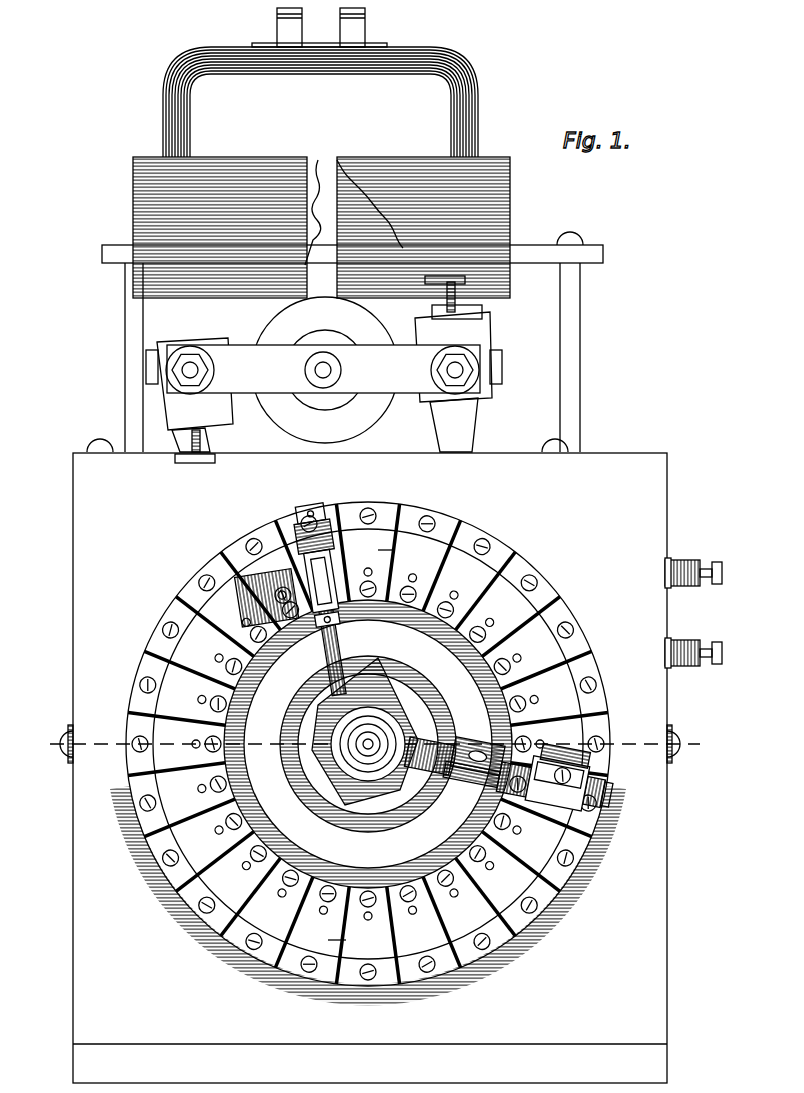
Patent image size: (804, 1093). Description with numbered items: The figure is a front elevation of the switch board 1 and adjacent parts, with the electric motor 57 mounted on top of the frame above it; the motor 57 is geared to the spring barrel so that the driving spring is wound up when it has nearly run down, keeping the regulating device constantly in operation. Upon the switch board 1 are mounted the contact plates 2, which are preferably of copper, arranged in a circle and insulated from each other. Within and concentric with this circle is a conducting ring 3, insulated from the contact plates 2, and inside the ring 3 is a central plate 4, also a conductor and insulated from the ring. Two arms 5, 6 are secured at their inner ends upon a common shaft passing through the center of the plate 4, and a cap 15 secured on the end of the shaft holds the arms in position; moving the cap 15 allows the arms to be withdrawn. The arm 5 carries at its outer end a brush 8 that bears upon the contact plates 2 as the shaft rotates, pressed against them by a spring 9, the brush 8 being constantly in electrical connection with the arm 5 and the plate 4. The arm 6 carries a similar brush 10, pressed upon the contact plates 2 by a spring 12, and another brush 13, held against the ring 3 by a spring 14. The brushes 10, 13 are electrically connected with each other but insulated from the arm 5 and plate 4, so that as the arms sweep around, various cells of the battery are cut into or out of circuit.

The switch board 1 is at (397, 768).
The contact plates 2 is at (223, 680).
The ring 3 is at (368, 744).
The central plate 4 is at (368, 744).
The arm 5 is at (344, 646).
The arm 6 is at (488, 794).
The brush 8 is at (265, 588).
The spring 9 is at (330, 516).
The brush 10 is at (592, 736).
The spring 12 is at (532, 804).
The brush 13 is at (466, 740).
The spring 14 is at (441, 790).
The cap 15 is at (358, 778).
The electric motor 57 is at (320, 82).